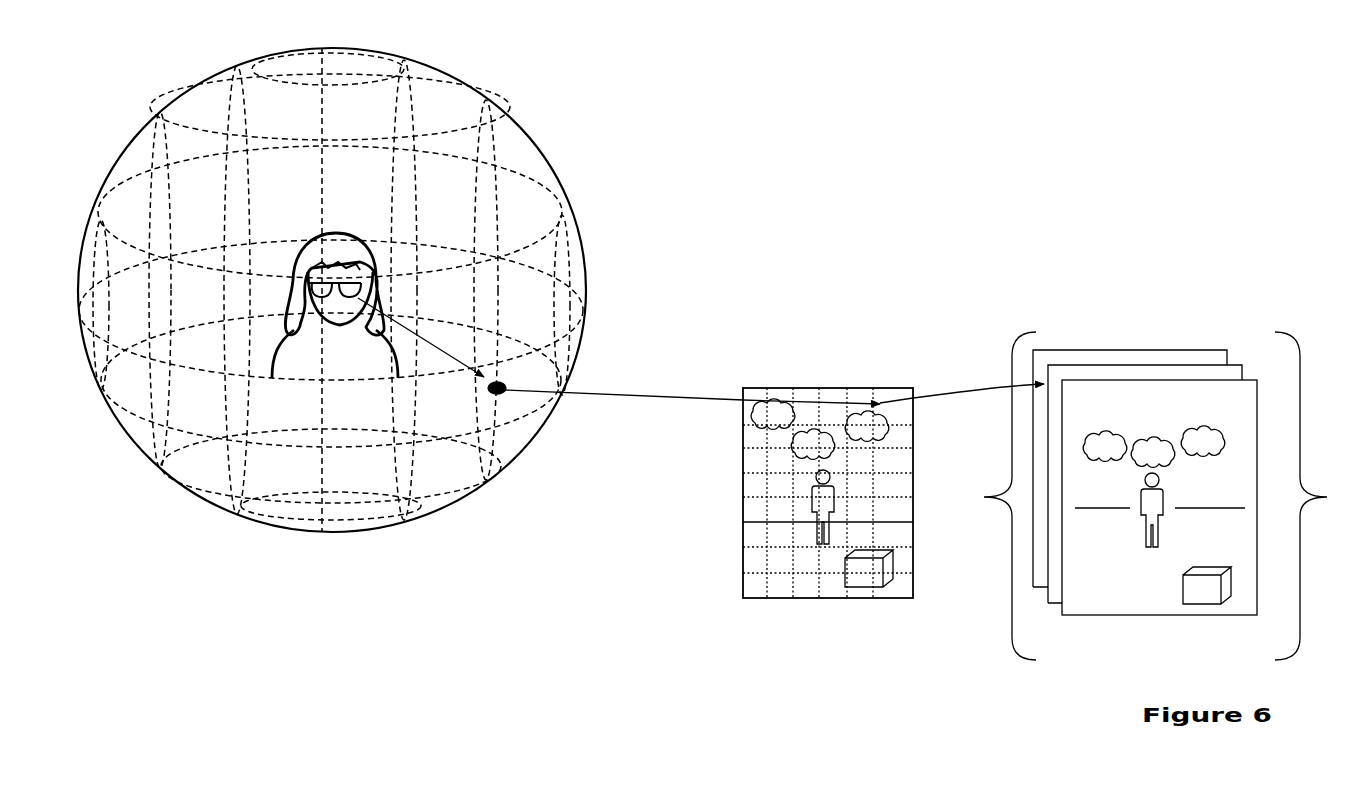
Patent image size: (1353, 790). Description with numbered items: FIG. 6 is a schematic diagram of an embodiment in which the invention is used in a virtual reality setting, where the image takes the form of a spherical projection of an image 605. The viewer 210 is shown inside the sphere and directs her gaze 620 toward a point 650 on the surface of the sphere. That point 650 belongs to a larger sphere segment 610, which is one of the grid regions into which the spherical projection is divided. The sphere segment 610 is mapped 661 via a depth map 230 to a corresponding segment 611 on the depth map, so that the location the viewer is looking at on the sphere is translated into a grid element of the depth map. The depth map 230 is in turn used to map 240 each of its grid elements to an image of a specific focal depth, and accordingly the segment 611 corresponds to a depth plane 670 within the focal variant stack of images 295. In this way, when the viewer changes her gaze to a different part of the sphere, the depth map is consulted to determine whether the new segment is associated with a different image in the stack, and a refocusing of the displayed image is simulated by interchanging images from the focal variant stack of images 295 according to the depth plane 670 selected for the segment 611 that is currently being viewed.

The spherical projection of an image 605 is at (455, 82).
The sphere segment 610 is at (428, 426).
The viewer 210 is at (340, 233).
The gaze 620 is at (427, 337).
The point of the sphere 650 is at (497, 378).
The mapping 661 is at (648, 396).
The depth map 230 is at (795, 388).
The depth map segment 611 is at (890, 396).
The map 240 is at (964, 392).
The depth plane 670 is at (1065, 366).
The focal variant stack of images 295 is at (1300, 343).